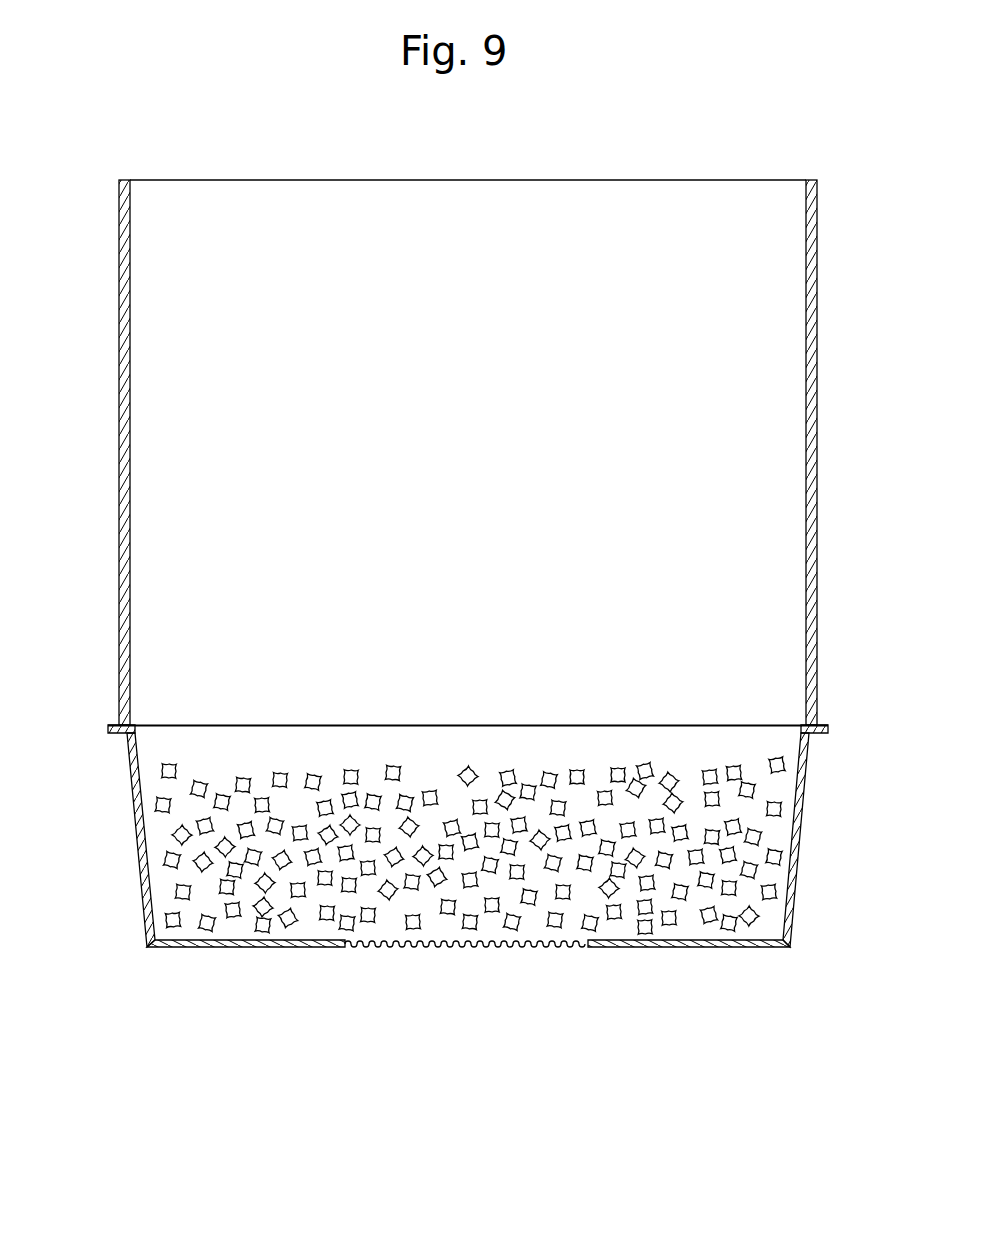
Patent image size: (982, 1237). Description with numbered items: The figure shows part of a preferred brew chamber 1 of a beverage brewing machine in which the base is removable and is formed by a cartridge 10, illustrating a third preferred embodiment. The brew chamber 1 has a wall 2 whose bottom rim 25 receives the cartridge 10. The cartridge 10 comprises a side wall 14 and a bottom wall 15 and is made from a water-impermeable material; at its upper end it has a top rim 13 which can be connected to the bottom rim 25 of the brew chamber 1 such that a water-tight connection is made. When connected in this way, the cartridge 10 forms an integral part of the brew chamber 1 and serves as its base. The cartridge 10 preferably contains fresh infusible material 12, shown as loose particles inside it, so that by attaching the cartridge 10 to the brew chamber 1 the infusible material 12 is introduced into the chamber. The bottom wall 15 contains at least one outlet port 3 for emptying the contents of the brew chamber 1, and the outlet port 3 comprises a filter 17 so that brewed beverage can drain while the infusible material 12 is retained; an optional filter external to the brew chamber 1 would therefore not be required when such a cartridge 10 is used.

The brew chamber 1 is at (478, 613).
The wall 2 is at (817, 437).
The bottom rim 25 is at (115, 725).
The top rim 13 is at (828, 733).
The cartridge 10 is at (490, 890).
The side wall 14 is at (802, 835).
The bottom wall 15 is at (468, 993).
The outlet port 3 is at (346, 945).
The filter 17 is at (490, 945).
The infusible material 12 is at (300, 843).